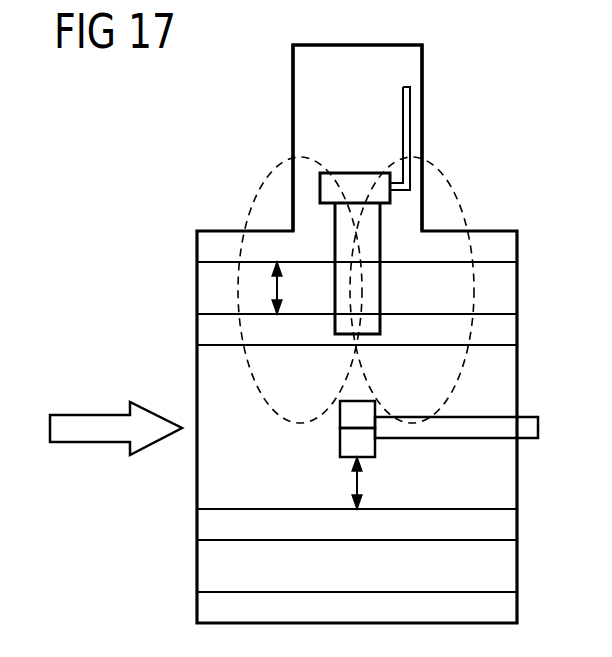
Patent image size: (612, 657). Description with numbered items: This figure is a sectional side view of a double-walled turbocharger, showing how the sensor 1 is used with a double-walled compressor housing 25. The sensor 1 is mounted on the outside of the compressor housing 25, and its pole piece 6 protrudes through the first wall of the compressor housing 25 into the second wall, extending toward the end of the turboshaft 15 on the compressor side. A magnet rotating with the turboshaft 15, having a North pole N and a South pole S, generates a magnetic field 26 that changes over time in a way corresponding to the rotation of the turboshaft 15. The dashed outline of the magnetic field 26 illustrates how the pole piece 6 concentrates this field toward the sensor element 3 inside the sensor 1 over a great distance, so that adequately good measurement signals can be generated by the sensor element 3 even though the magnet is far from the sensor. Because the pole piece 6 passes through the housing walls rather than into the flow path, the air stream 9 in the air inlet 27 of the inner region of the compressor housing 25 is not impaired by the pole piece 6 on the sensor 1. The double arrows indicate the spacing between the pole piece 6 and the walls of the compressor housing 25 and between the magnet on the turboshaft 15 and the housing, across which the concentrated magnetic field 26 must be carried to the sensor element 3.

The sensor 1 is at (410, 63).
The sensor element 3 is at (409, 135).
The pole piece 6 is at (370, 290).
The air stream 9 is at (92, 425).
The turboshaft 15 is at (527, 422).
The compressor housing 25 is at (503, 238).
The magnetic field 26 is at (257, 198).
The air inlet 27 is at (240, 468).
The North pole N is at (360, 408).
The South pole S is at (363, 443).